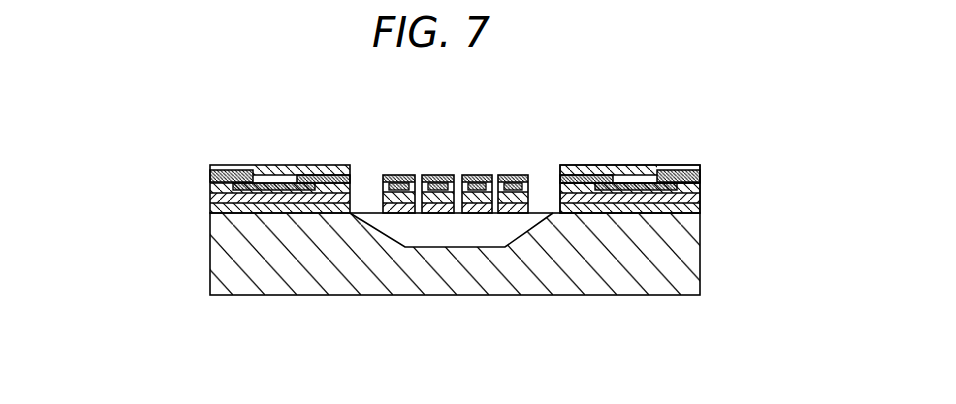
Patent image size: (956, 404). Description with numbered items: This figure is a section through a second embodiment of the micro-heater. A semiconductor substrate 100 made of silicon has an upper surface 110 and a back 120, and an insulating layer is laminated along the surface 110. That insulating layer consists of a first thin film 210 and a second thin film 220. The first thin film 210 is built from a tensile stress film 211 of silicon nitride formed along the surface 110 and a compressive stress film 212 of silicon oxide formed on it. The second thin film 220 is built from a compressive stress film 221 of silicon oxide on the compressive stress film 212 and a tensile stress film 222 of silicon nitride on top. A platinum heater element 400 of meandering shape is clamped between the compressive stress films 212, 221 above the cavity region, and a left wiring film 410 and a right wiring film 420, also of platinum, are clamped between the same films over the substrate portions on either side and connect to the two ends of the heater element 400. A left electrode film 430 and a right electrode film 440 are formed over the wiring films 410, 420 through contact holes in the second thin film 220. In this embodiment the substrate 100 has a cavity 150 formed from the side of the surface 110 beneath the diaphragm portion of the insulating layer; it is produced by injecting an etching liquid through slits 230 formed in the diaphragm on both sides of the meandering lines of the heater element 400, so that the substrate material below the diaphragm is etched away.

The semiconductor substrate 100 is at (198, 280).
The surface 110 is at (338, 166).
The back 120 is at (268, 296).
The cavity 150 is at (378, 230).
The first thin film 210 is at (727, 198).
The tensile stress film 211 is at (211, 207).
The compressive stress film 212 is at (211, 198).
The second thin film 220 is at (727, 167).
The compressive stress film 221 is at (211, 181).
The tensile stress film 222 is at (211, 167).
The slits 230 is at (419, 175).
The heater element 400 is at (513, 163).
The left wiring film 410 is at (261, 166).
The right wiring film 420 is at (637, 166).
The left electrode film 430 is at (283, 166).
The right electrode film 440 is at (662, 166).